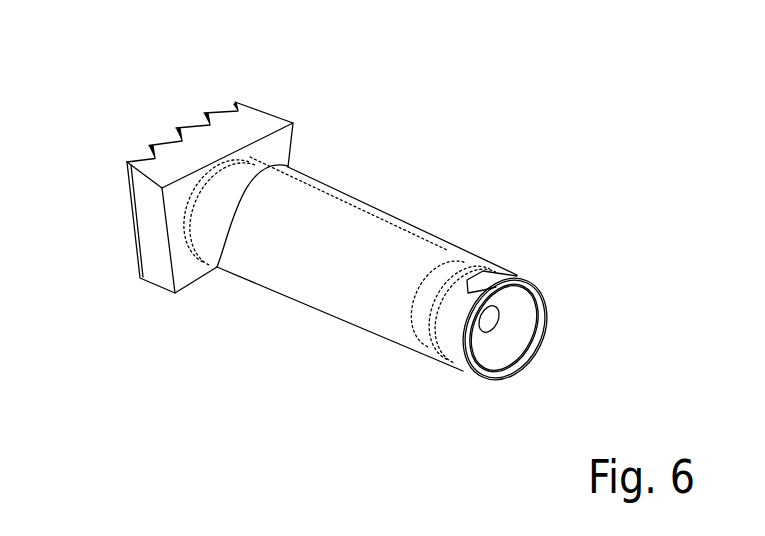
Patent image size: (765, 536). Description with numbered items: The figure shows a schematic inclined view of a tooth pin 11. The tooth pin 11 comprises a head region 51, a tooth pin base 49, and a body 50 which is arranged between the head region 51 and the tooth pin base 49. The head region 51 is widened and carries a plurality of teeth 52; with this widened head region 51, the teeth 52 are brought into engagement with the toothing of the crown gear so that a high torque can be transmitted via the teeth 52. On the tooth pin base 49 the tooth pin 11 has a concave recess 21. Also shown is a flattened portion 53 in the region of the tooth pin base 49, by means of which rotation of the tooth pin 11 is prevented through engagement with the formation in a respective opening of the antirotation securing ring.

The tooth pin 11 is at (418, 152).
The concave recess 21 is at (518, 320).
The tooth pin base 49 is at (463, 372).
The body 50 is at (303, 307).
The head region 51 is at (153, 286).
The teeth 52 is at (127, 161).
The flattened portion 53 is at (520, 264).